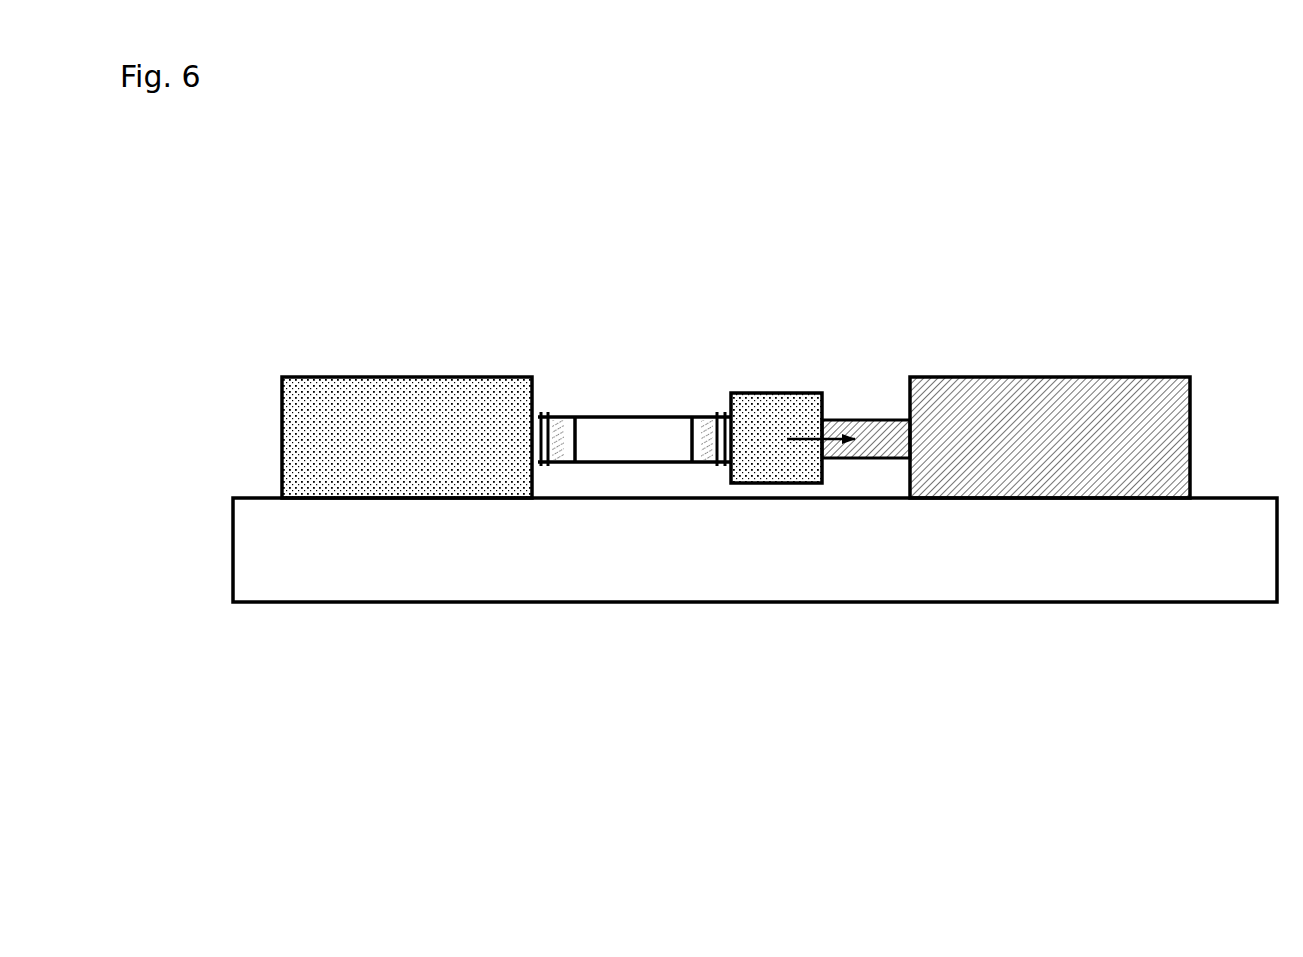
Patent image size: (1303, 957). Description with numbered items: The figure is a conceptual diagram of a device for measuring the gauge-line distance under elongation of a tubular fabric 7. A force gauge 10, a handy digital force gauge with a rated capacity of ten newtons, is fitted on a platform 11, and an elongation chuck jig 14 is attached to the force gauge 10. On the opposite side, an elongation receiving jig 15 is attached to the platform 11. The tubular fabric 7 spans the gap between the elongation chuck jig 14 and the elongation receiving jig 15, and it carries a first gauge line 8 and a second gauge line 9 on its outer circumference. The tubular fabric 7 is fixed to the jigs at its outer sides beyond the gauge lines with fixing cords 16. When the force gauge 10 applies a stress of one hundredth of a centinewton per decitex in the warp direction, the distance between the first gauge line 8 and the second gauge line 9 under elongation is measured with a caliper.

The tubular fabric 7 is at (632, 413).
The first gauge line 8 is at (577, 413).
The second gauge line 9 is at (693, 413).
The force gauge 10 is at (1077, 373).
The platform 11 is at (948, 603).
The elongation chuck jig 14 is at (777, 392).
The elongation receiving jig 15 is at (432, 370).
The fixing cords 16 is at (712, 475).